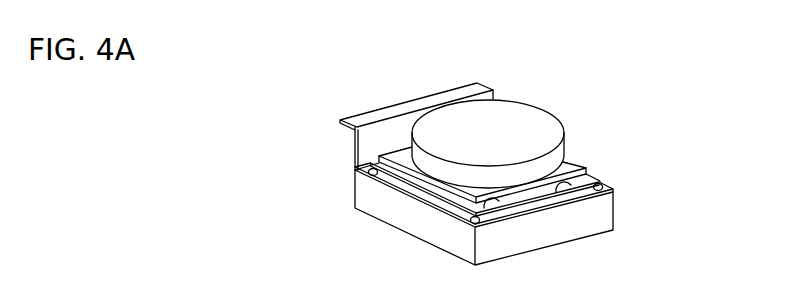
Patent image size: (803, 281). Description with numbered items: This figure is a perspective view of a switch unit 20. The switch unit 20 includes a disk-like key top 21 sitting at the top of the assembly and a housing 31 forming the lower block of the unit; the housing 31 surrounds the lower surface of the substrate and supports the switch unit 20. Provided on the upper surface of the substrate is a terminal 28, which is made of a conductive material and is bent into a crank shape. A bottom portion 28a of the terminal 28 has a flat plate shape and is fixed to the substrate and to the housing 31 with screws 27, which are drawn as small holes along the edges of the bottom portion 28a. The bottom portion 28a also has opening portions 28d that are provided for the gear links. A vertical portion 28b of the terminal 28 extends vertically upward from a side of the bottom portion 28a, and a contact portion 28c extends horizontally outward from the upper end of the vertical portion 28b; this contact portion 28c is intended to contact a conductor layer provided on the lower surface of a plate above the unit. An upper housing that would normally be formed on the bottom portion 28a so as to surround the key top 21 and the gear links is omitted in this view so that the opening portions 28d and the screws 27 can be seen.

The switch unit 20 is at (606, 114).
The key top 21 is at (565, 127).
The screws 27 is at (370, 175).
The terminal 28 is at (612, 193).
The bottom portion 28a is at (421, 190).
The vertical portion 28b is at (362, 150).
The contact portion 28c is at (381, 110).
The opening portions 28d is at (558, 190).
The housing 31 is at (607, 219).